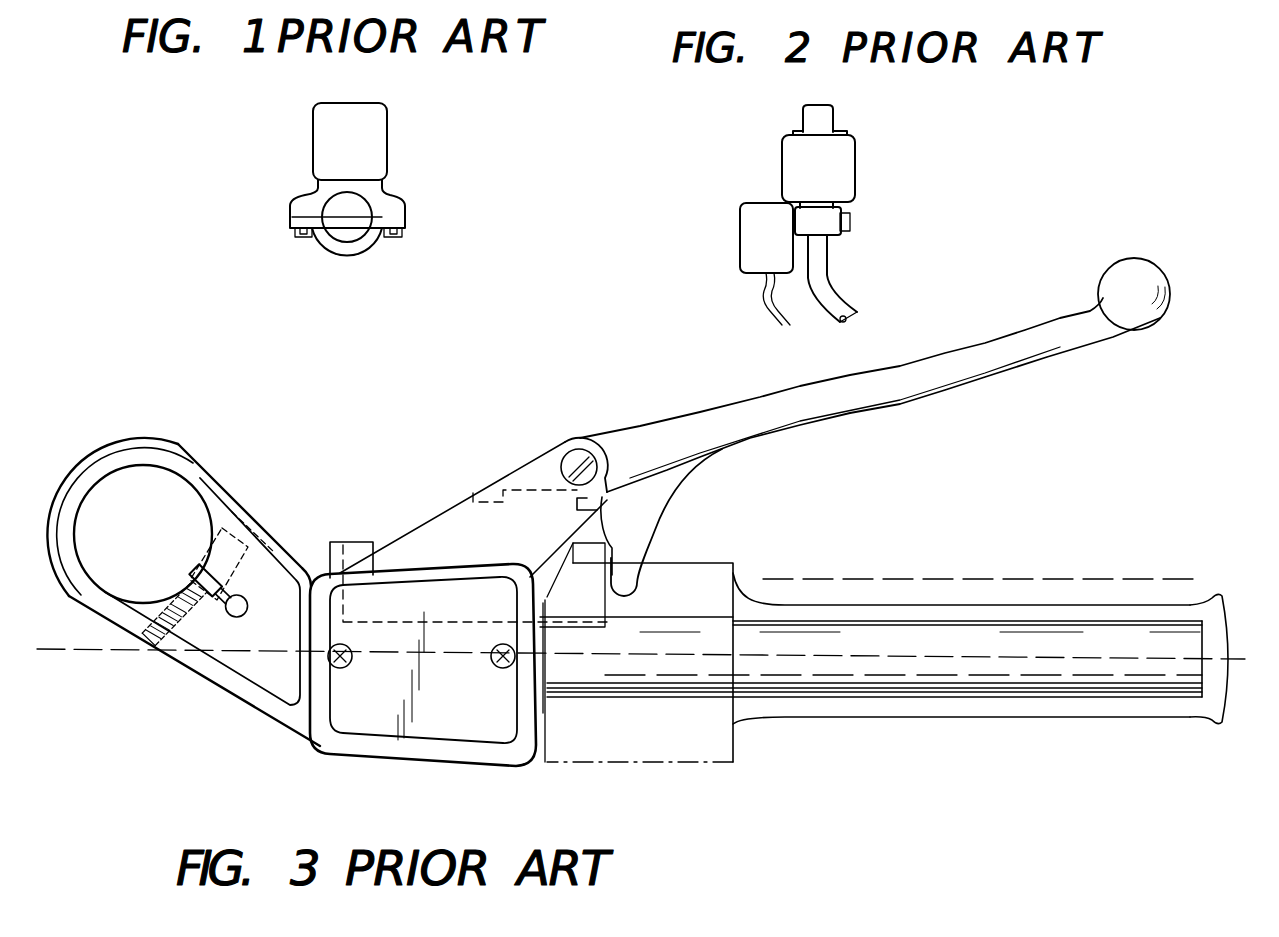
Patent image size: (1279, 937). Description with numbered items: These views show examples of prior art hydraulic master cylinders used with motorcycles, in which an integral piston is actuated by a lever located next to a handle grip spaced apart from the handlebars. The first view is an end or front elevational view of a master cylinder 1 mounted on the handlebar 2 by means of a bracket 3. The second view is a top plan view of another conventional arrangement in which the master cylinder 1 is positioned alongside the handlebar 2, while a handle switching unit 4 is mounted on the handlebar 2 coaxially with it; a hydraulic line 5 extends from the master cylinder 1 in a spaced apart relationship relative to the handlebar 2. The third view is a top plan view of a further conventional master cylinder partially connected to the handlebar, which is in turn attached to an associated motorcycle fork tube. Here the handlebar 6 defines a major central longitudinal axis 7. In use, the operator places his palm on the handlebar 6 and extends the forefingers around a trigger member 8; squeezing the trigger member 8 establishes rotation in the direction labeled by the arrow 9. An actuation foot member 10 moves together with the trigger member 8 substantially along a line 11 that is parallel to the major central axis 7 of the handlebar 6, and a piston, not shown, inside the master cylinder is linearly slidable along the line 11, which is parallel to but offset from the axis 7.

In FIG. 1, the master cylinder 1 is at (385, 143).
In FIG. 2, the master cylinder 1 is at (745, 240).
In FIG. 1, the handlebar 2 is at (345, 237).
In FIG. 2, the handlebar 2 is at (853, 303).
In FIG. 1, the bracket 3 is at (398, 203).
In FIG. 2, the handle switching unit 4 is at (850, 175).
In FIG. 2, the hydraulic line 5 is at (767, 295).
In FIG. 3, the handlebar 6 is at (820, 723).
In FIG. 3, the major central axis 7 is at (1180, 660).
In FIG. 3, the trigger member 8 is at (888, 388).
In FIG. 3, the arrow 9 is at (1134, 332).
In FIG. 3, the actuation foot member 10 is at (643, 512).
In FIG. 3, the line 11 is at (1059, 578).